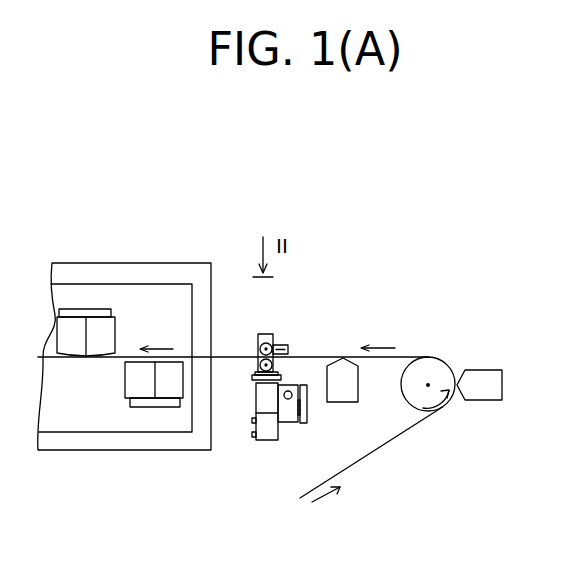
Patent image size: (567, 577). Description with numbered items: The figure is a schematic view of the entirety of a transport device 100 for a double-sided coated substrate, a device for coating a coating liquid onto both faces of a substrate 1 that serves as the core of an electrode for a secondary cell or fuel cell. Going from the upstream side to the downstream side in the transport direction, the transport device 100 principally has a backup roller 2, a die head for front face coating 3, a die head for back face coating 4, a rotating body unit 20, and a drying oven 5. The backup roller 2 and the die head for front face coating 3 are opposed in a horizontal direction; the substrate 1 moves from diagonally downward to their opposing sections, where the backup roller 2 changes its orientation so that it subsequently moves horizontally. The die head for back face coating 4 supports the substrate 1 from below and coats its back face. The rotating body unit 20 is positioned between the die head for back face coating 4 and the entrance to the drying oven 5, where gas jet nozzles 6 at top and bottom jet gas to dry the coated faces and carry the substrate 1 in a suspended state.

The transport device 100 is at (375, 283).
The substrate 1 is at (377, 450).
The backup roller 2 is at (445, 408).
The die head for front face coating 3 is at (502, 400).
The die head for back face coating 4 is at (352, 402).
The drying oven 5 is at (118, 263).
The gas jet nozzles 6 is at (95, 358).
The rotating body unit 20 is at (282, 321).